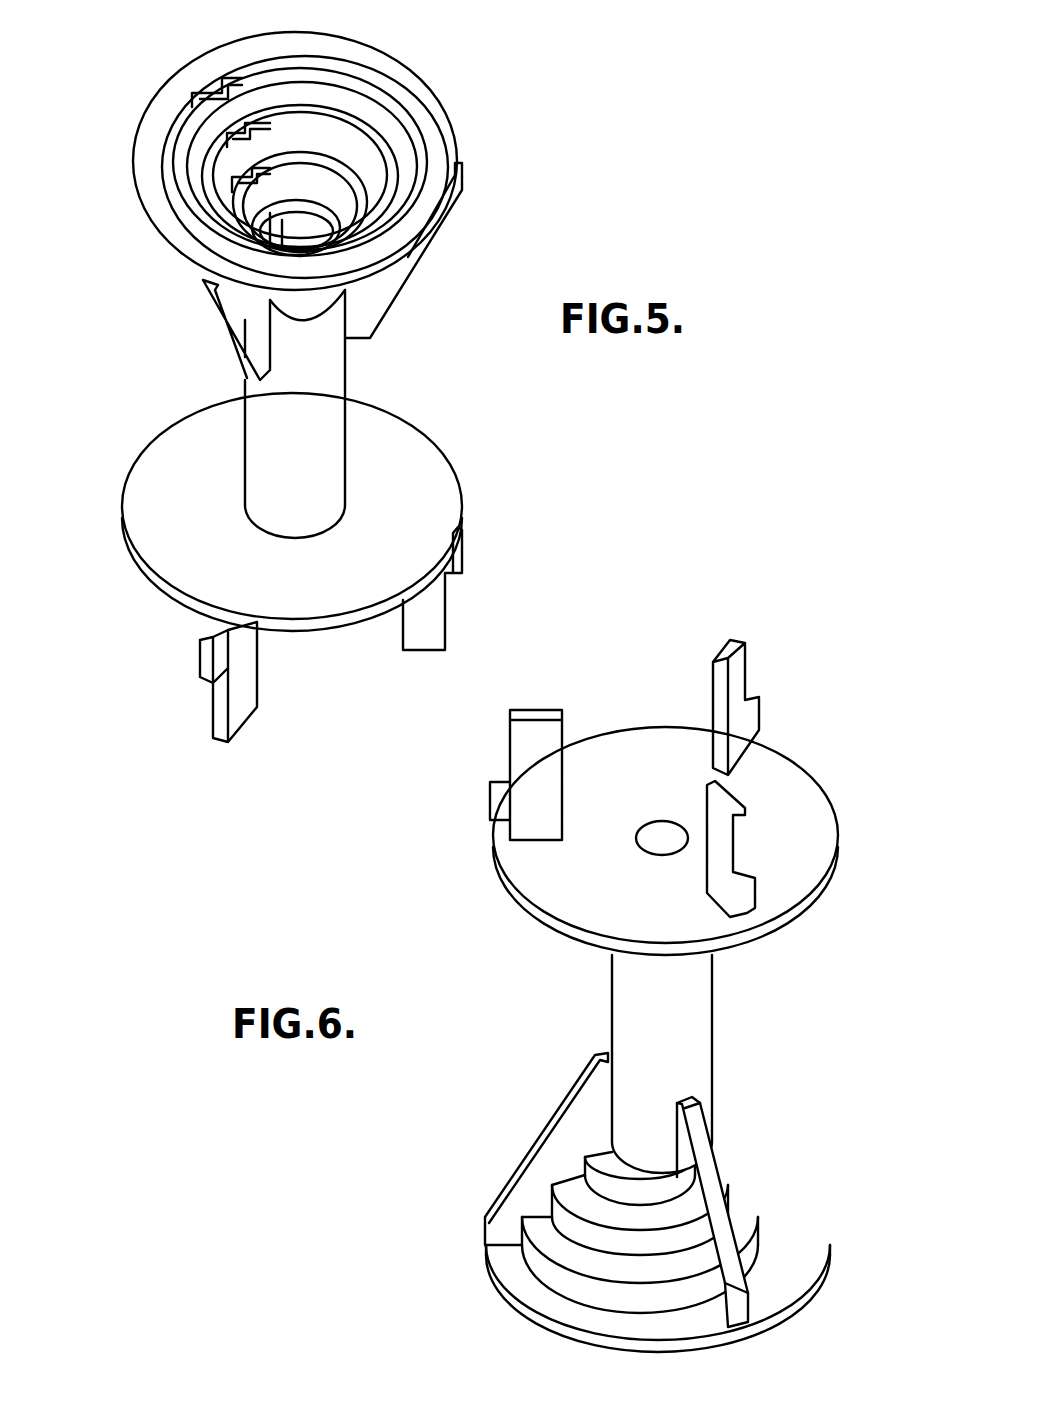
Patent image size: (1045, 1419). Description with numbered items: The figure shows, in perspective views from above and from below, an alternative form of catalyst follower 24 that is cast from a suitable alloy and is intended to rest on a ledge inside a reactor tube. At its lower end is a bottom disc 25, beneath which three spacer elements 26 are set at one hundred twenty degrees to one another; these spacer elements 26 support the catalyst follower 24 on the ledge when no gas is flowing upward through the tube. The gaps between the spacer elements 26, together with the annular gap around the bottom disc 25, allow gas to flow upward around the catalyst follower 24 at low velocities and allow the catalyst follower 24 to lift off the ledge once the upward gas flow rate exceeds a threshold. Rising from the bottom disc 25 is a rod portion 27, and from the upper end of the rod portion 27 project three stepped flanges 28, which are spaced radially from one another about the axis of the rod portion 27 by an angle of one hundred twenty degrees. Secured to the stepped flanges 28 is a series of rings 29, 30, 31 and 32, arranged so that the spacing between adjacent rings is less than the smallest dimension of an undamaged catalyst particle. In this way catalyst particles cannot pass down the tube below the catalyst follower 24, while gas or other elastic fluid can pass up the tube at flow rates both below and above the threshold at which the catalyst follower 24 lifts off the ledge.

In FIG. 5, the catalyst follower 24 is at (433, 423).
In FIG. 6, the catalyst follower 24 is at (597, 1025).
In FIG. 5, the bottom disc 25 is at (150, 580).
In FIG. 6, the bottom disc 25 is at (787, 797).
In FIG. 5, the spacer elements 26 is at (422, 607).
In FIG. 6, the spacer elements 26 is at (715, 683).
In FIG. 5, the rod portion 27 is at (317, 372).
In FIG. 6, the rod portion 27 is at (678, 998).
In FIG. 5, the stepped flanges 28 is at (245, 358).
In FIG. 6, the stepped flanges 28 is at (572, 1133).
In FIG. 5, the ring 29 is at (243, 230).
In FIG. 6, the ring 29 is at (717, 1197).
In FIG. 5, the ring 30 is at (213, 182).
In FIG. 6, the ring 30 is at (747, 1173).
In FIG. 5, the ring 31 is at (193, 130).
In FIG. 6, the ring 31 is at (777, 1207).
In FIG. 5, the ring 32 is at (233, 55).
In FIG. 6, the ring 32 is at (798, 1273).